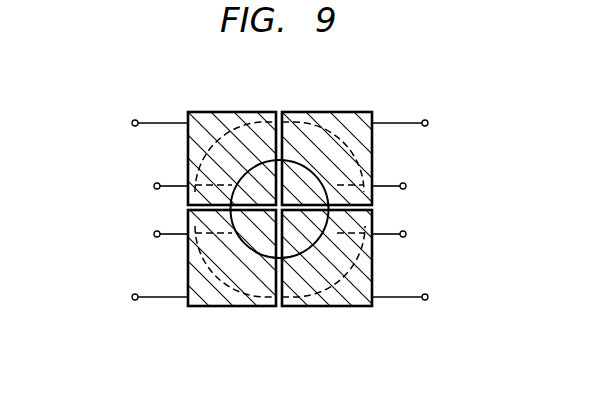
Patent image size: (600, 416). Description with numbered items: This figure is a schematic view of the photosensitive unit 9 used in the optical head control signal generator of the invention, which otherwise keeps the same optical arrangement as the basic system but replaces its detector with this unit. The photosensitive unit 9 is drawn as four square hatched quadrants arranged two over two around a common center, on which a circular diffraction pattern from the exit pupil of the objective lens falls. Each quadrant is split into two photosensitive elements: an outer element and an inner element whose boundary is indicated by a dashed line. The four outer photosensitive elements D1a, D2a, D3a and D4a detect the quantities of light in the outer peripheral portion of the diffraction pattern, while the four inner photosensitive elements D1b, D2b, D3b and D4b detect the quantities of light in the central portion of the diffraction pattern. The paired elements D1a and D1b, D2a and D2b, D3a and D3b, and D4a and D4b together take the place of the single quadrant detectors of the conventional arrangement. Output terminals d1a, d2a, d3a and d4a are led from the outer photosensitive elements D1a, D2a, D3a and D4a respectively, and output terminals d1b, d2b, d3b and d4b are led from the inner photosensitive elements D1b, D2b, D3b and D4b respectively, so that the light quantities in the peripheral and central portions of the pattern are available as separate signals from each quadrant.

The photosensitive unit 9 is at (84, 202).
The photosensitive element D1a is at (202, 150).
The photosensitive element D1b is at (248, 185).
The photosensitive element D2a is at (372, 147).
The photosensitive element D2b is at (327, 198).
The photosensitive element D3a is at (193, 268).
The photosensitive element D3b is at (247, 240).
The photosensitive element D4a is at (356, 272).
The photosensitive element D4b is at (305, 237).
The output terminal d1a is at (140, 124).
The output terminal d1b is at (152, 186).
The output terminal d2a is at (416, 124).
The output terminal d2b is at (405, 186).
The output terminal d3a is at (140, 299).
The output terminal d3b is at (152, 236).
The output terminal d4a is at (416, 299).
The output terminal d4b is at (405, 236).